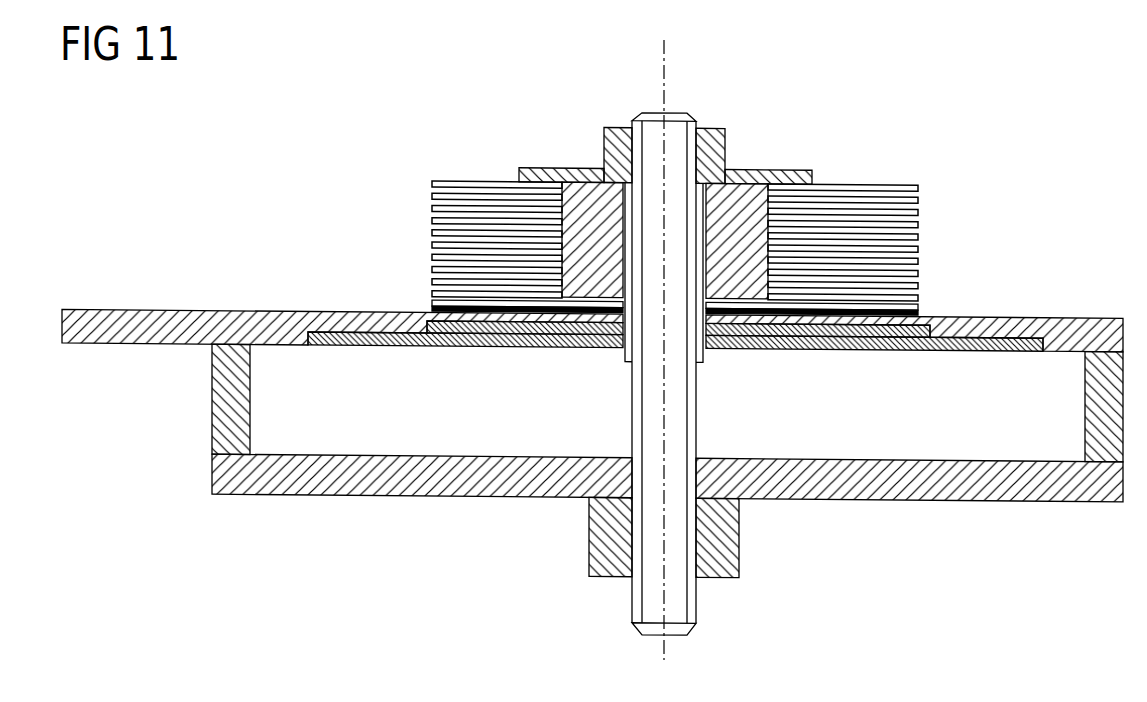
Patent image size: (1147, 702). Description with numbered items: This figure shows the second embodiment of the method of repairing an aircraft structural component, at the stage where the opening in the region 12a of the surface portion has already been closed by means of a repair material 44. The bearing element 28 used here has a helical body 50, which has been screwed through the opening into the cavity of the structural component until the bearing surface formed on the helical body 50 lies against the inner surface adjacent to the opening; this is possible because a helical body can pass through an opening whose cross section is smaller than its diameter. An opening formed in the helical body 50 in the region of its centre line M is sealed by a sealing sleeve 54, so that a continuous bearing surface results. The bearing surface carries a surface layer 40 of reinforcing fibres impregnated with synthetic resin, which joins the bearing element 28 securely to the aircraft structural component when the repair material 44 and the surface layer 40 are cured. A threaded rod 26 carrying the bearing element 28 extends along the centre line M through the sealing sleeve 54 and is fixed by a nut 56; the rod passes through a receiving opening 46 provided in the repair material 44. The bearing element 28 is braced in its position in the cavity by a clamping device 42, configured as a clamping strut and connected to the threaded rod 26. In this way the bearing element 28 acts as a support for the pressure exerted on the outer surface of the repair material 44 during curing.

The centre line M is at (661, 68).
The region of the surface portion 12a is at (1073, 333).
The threaded rod 26 is at (688, 382).
The bearing element 28 is at (853, 92).
The surface layer 40 is at (920, 312).
The clamping device 42 is at (957, 485).
The repair material 44 is at (483, 343).
The receiving opening 46 is at (628, 340).
The helical body 50 is at (878, 200).
The sealing sleeve 54 is at (744, 193).
The nut 56 is at (716, 127).